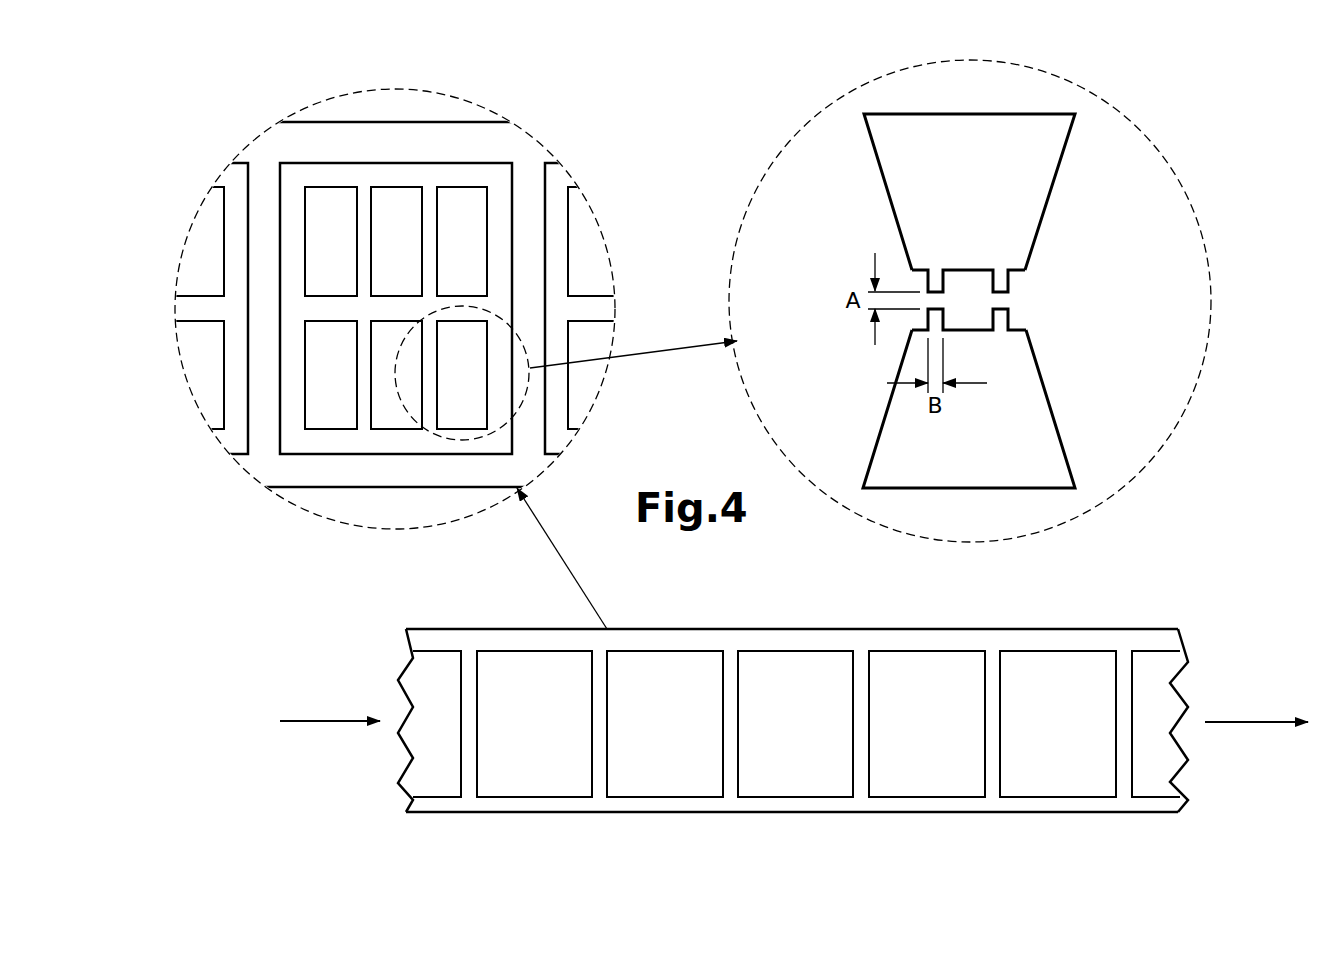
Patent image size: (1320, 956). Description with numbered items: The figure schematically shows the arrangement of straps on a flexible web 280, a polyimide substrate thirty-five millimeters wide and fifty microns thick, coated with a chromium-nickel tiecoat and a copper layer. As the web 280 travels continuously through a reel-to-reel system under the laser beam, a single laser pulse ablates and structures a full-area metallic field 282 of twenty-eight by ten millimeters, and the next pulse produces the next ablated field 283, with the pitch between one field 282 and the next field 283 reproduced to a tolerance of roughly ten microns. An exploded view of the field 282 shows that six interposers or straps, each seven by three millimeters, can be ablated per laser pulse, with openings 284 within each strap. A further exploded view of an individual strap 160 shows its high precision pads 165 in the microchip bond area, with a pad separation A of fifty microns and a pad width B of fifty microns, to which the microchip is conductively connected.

The strap 160 is at (1040, 100).
The high precision pads 165 is at (1010, 287).
The flexible web 280 is at (338, 498).
The metallic field 282 is at (400, 163).
The next ablated field 283 is at (537, 650).
The opening 284 is at (463, 187).